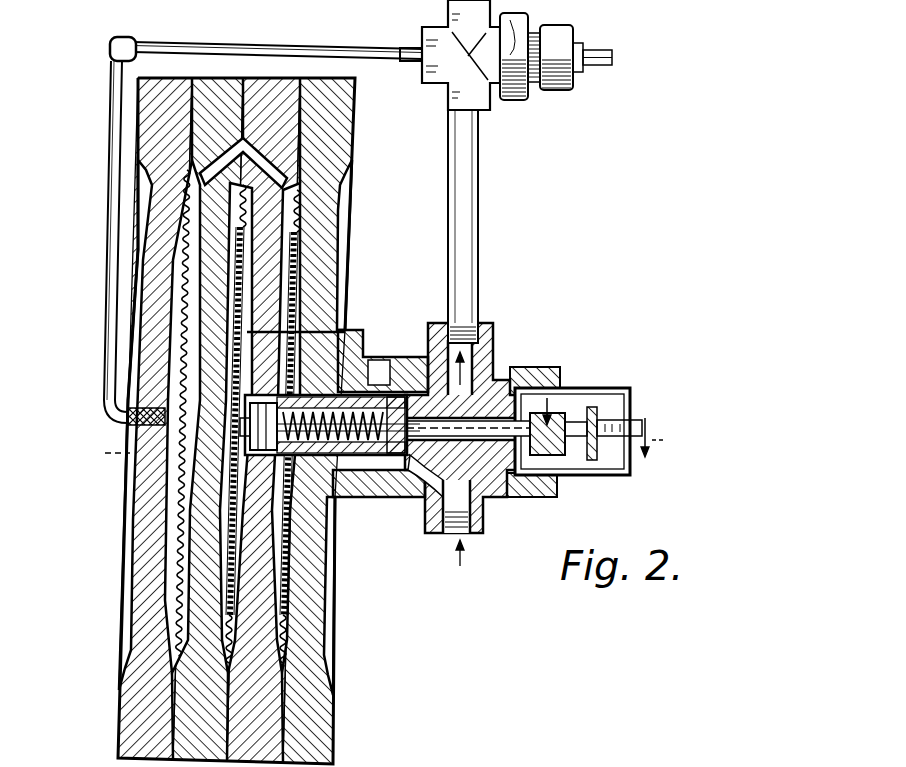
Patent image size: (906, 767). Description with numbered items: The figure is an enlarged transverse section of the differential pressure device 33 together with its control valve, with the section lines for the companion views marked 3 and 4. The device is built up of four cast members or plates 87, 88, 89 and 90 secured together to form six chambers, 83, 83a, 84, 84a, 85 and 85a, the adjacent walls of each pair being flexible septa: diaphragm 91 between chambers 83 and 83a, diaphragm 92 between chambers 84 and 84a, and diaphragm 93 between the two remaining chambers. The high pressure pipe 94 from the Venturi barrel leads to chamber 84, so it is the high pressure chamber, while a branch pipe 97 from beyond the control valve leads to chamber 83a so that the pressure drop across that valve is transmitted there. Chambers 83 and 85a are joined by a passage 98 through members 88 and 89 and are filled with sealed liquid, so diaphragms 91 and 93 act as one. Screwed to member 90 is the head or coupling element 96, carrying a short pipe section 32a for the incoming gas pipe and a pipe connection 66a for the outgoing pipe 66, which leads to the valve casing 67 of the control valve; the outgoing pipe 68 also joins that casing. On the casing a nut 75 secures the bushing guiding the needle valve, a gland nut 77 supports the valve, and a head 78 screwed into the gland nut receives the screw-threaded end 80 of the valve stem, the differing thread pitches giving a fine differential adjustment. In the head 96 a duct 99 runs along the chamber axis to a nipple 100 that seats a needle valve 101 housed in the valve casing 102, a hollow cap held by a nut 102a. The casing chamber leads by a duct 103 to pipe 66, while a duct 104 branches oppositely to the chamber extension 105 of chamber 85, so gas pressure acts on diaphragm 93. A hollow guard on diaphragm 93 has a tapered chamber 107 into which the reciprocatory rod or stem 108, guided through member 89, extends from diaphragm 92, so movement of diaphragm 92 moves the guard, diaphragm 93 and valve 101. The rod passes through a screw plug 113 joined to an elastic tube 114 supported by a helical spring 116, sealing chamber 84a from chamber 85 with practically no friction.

The cast member or plate 87 is at (184, 83).
The cast member or plate 88 is at (243, 83).
The cast member or plate 89 is at (297, 83).
The cast member or plate 90 is at (350, 83).
The diaphragm 91 is at (160, 503).
The diaphragm 92 is at (230, 628).
The diaphragm 93 is at (287, 625).
The high pressure pipe 94 is at (165, 325).
The branch pipe 97 is at (114, 134).
The passage 98 is at (275, 158).
The differential pressure device 33 is at (256, 421).
The chamber 83 is at (200, 310).
The chamber 83a is at (180, 248).
The chamber 84 is at (236, 278).
The chamber 84a is at (345, 332).
The chamber 85 is at (297, 277).
The chamber 85a is at (287, 222).
The helical spring 116 is at (383, 361).
The chamber extension 105 is at (410, 360).
The duct 104 is at (440, 323).
The head or coupling element 96 is at (497, 380).
The outgoing pipe 66 is at (480, 158).
The pipe connection 66a is at (495, 324).
The valve casing 67 is at (459, 57).
The outgoing pipe 68 is at (495, 5).
The nut 75 is at (520, 100).
The gland nut 77 is at (555, 90).
The head 78 is at (590, 72).
The screw-threaded end 80 is at (587, 47).
The short pipe section 32a is at (475, 548).
The chamber of hollow guard 107 is at (355, 497).
The duct 99 is at (432, 516).
The elastic tube 114 is at (455, 560).
The needle valve 101 is at (560, 477).
The valve casing 102 is at (632, 408).
The nut 102a is at (548, 390).
The duct 103 is at (587, 390).
The nipple 100 is at (560, 410).
The screw plug 113 is at (240, 445).
The reciprocatory rod or stem 108 is at (245, 432).
The section line 3- 3 is at (255, 456).
The section line 4- 4 is at (508, 425).